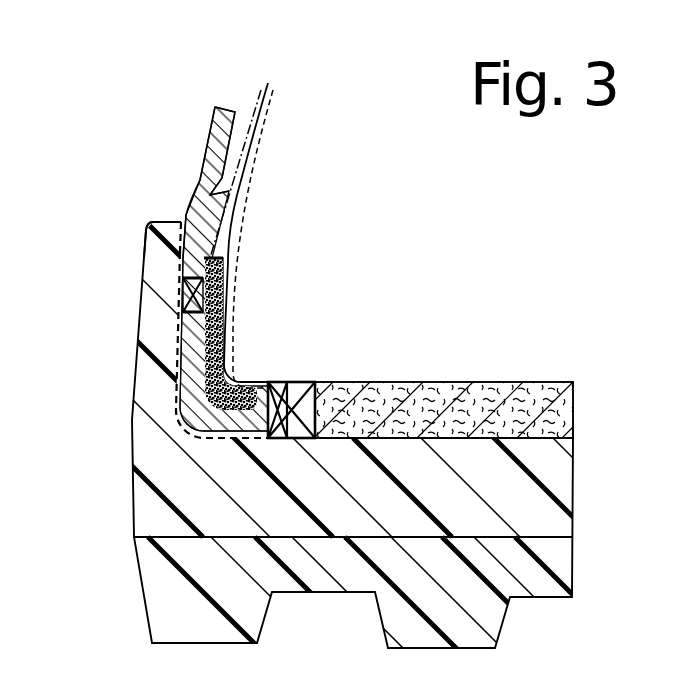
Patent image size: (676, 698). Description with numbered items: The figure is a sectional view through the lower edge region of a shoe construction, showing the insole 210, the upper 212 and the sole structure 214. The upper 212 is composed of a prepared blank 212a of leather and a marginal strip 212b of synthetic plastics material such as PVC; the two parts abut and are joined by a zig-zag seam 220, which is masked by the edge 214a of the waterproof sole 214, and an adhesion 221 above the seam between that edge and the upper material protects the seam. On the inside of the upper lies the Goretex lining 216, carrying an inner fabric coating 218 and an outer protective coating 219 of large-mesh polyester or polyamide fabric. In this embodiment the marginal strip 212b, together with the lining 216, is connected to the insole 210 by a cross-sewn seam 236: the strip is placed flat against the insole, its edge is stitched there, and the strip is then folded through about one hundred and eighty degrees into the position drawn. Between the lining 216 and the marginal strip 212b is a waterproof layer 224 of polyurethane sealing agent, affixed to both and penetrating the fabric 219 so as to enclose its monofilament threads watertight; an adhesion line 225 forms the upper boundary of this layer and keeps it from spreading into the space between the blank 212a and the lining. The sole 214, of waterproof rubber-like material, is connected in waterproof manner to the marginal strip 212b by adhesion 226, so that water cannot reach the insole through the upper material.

The insole 210 is at (478, 387).
The upper 212 is at (162, 242).
The prepared blank 212a is at (203, 167).
The marginal strip 212b is at (177, 335).
The sole structure 214 is at (326, 422).
The edge of the sole 214a is at (148, 245).
The lining 216 is at (270, 84).
The inner fabric coating 218 is at (260, 134).
The outer protective coating 219 is at (258, 97).
The zig-zag seam 220 is at (177, 278).
The adhesion 221 is at (180, 238).
The layer of polyurethane sealing agent 224 is at (226, 296).
The adhesion line 225 is at (237, 207).
The adhesion 226 is at (173, 397).
The cross-sewn seam 236 is at (315, 381).